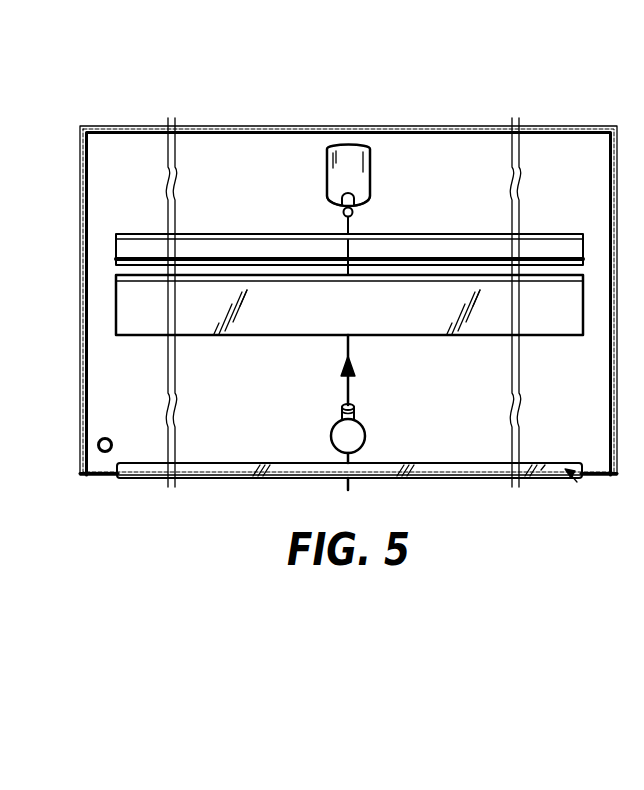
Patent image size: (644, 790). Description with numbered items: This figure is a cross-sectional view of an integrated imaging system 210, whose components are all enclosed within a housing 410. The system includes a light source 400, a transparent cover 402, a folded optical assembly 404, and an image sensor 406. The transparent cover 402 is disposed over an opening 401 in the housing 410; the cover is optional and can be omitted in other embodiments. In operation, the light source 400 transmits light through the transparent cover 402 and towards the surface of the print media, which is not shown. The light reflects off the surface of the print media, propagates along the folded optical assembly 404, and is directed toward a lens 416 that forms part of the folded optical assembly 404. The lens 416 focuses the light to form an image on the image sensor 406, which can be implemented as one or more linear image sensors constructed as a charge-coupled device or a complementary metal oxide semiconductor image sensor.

The integrated imaging system 210 is at (138, 74).
The housing 410 is at (80, 231).
The opening 401 is at (577, 482).
The lens 416 is at (243, 234).
The folded optical assembly 404 is at (243, 336).
The image sensor 406 is at (370, 162).
The light source 400 is at (338, 427).
The transparent cover 402 is at (448, 480).